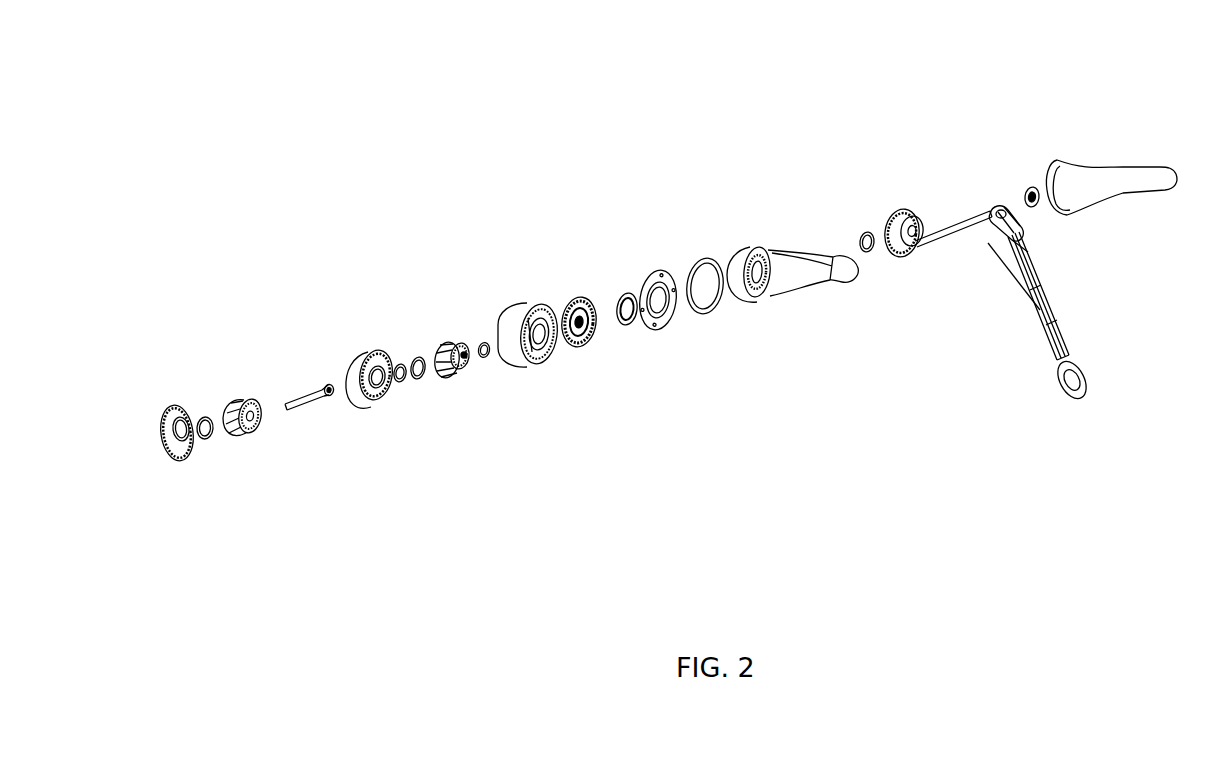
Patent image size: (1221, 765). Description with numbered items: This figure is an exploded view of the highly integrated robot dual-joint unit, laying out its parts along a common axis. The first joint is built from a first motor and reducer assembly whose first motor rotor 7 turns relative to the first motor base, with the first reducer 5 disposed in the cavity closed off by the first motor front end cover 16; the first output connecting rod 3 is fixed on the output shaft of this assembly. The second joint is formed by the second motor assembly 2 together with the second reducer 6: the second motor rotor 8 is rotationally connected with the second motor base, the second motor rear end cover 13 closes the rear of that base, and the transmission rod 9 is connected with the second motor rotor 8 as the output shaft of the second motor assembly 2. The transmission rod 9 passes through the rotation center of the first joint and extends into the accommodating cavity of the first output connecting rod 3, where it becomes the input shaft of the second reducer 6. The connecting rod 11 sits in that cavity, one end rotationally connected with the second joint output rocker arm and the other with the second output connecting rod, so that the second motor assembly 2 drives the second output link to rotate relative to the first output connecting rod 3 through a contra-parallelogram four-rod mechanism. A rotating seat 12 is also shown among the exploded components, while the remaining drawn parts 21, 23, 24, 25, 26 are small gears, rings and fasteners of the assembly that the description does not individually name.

The second motor assembly 2 is at (570, 297).
The first output connecting rod 3 is at (1037, 303).
The first reducer 5 is at (1023, 237).
The second reducer 6 is at (445, 343).
The first motor rotor 7 is at (300, 400).
The second motor rotor 8 is at (923, 210).
The transmission rod 9 is at (890, 210).
The connecting rod 11 is at (957, 230).
The rotating seat 12 is at (1003, 207).
The second motor rear end cover 13 is at (1062, 162).
The first motor front end cover 16 is at (647, 272).
The crank 21 is at (735, 247).
The gear 23 is at (168, 408).
The housing 24 is at (508, 308).
The gear 25 is at (358, 357).
The gear 26 is at (233, 400).